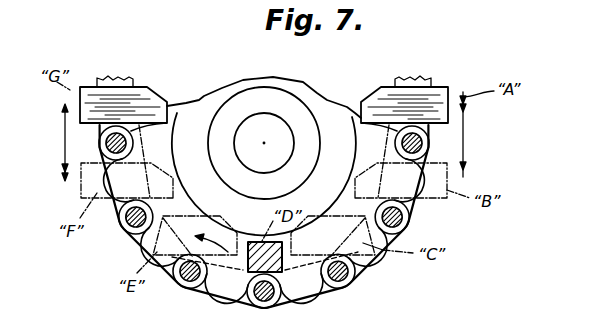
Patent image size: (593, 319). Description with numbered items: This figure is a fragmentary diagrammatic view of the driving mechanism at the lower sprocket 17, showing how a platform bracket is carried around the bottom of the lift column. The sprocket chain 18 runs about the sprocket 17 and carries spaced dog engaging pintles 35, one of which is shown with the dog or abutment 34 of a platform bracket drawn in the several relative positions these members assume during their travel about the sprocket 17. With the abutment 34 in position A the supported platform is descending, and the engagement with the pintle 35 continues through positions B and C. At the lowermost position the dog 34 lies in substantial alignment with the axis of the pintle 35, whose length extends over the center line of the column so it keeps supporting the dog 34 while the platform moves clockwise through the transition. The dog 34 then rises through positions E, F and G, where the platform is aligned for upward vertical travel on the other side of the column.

The lower sprocket 17 is at (317, 98).
The sprocket chain 18 is at (431, 80).
The dog or abutment 34 is at (148, 93).
The dog engaging pintle 35 is at (127, 145).